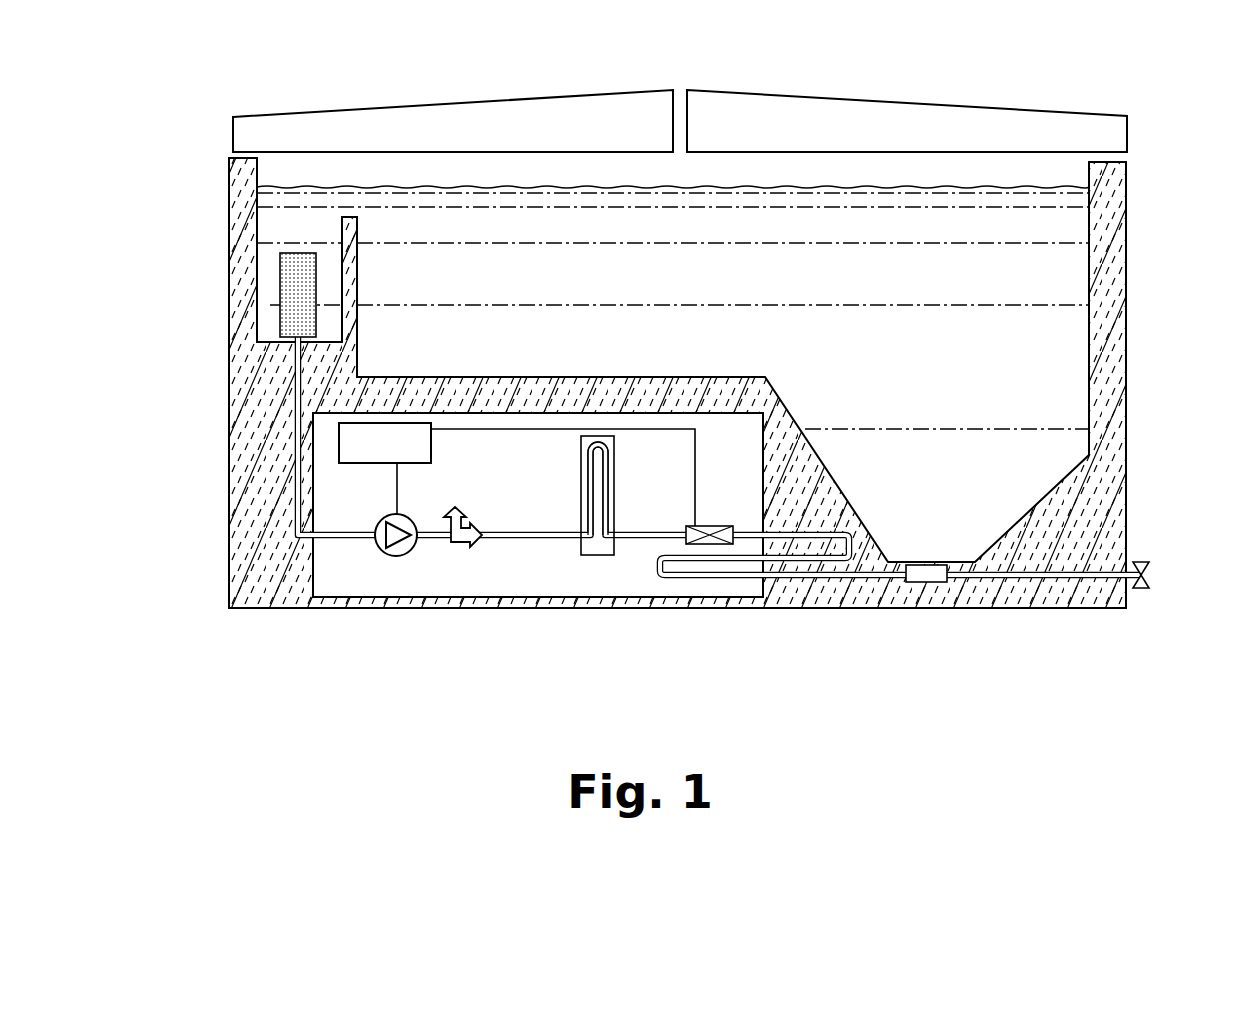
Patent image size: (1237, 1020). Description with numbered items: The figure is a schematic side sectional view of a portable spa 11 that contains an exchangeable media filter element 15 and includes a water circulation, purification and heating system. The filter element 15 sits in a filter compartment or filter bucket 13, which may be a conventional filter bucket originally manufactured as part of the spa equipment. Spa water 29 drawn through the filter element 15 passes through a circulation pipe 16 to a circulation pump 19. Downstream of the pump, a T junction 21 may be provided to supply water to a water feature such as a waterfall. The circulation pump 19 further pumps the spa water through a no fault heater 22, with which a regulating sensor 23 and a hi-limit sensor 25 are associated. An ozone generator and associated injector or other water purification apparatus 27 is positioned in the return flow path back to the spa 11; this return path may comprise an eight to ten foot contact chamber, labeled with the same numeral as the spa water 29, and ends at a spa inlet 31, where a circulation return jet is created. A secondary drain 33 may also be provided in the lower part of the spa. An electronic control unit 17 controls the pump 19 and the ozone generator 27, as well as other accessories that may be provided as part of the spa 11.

The portable spa 11 is at (1158, 247).
The filter bucket 13 is at (294, 233).
The exchangeable media filter element 15 is at (282, 265).
The circulation pipe 16 is at (330, 538).
The electronic control unit 17 is at (378, 423).
The circulation pump 19 is at (404, 516).
The T junction 21 is at (467, 511).
The no fault heater 22 is at (616, 448).
The regulating sensor 23 is at (578, 533).
The hi-limit sensor 25 is at (247, 380).
The ozone generator 27 is at (716, 525).
The spa water 29 is at (752, 286).
The spa inlet 31 is at (928, 565).
The secondary drain 33 is at (1143, 562).